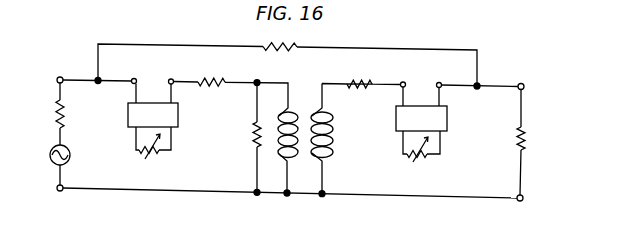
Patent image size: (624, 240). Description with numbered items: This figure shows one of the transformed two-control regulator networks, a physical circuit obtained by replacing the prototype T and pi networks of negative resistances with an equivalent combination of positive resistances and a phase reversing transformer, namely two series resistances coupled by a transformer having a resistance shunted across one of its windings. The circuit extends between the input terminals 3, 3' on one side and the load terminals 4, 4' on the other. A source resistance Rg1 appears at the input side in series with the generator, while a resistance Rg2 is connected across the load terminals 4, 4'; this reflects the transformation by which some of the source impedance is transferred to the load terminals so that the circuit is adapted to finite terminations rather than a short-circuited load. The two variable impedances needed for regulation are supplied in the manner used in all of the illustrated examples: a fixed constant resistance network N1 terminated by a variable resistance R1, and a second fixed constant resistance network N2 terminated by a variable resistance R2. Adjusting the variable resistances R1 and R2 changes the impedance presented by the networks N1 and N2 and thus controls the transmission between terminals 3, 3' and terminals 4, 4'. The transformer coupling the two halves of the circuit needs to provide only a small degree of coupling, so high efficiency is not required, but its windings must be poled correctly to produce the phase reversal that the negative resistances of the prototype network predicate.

The input terminal 3 is at (54, 80).
The input terminal 3' is at (53, 190).
The load terminal 4 is at (526, 88).
The load terminal 4' is at (527, 200).
The source resistance Rg1 is at (44, 114).
The load resistance Rg2 is at (538, 143).
The fixed constant resistance network N1 is at (153, 106).
The fixed constant resistance network N2 is at (421, 109).
The variable resistance R1 is at (153, 153).
The variable resistance R2 is at (421, 156).